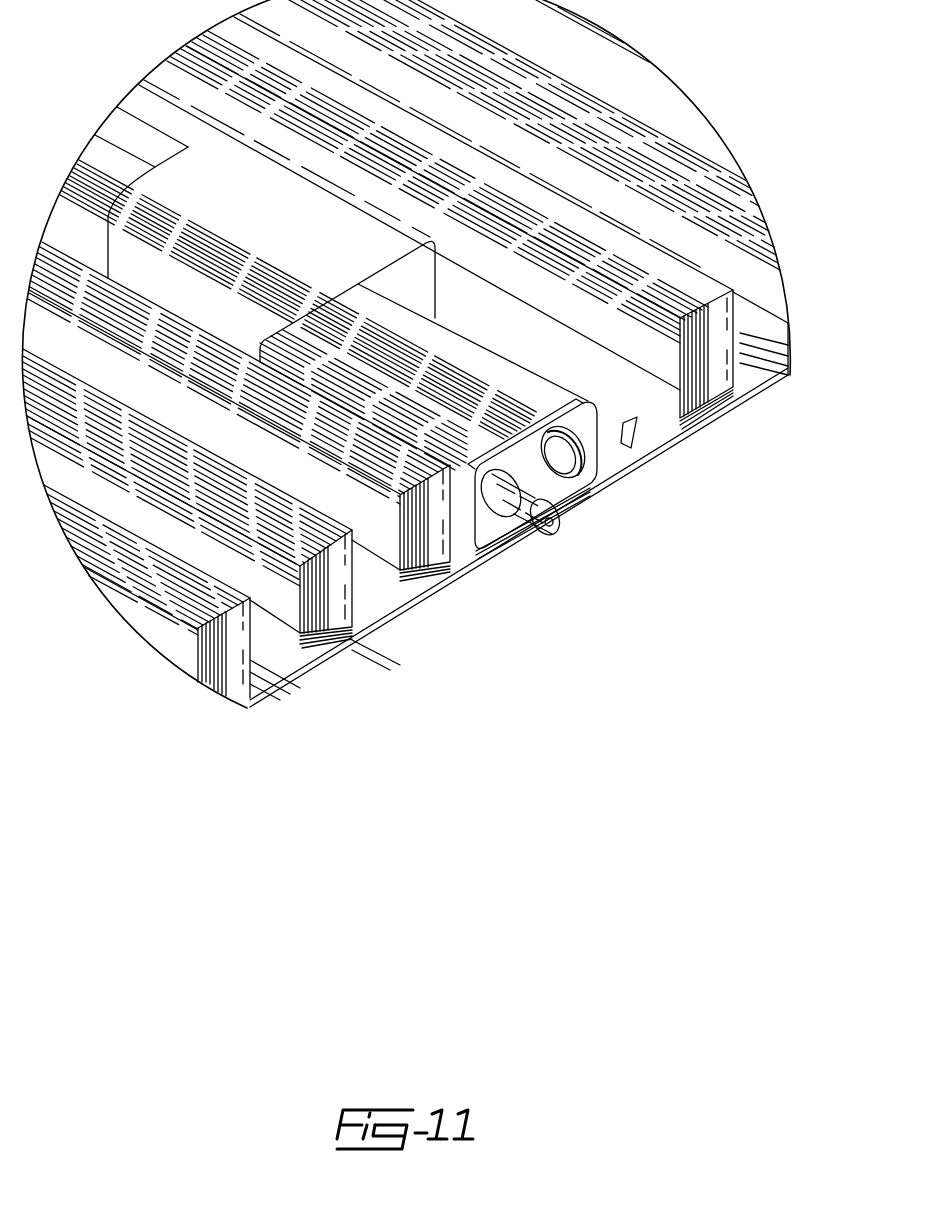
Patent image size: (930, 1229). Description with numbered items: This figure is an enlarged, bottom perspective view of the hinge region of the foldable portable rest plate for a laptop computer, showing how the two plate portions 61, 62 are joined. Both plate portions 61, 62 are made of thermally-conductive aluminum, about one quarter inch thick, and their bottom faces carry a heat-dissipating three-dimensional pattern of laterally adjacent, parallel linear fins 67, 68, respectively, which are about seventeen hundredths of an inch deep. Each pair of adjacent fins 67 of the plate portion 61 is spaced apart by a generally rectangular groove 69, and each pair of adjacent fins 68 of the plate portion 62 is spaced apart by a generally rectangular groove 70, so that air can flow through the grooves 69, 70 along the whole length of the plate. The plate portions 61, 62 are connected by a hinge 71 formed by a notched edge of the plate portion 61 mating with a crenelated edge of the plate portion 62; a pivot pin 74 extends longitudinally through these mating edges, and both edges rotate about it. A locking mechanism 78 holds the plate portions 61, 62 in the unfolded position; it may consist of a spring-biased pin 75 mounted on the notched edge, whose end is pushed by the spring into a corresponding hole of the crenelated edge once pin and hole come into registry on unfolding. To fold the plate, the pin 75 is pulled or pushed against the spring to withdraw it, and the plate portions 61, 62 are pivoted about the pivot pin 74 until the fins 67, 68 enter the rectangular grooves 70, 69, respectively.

The plate portion 61 is at (634, 470).
The plate portion 62 is at (366, 634).
The linear fins 67 is at (685, 287).
The linear fins 68 is at (185, 605).
The rectangular groove 69 is at (763, 275).
The rectangular groove 70 is at (292, 638).
The hinge 71 is at (572, 521).
The pivot pin 74 is at (561, 449).
The spring-biased pin 75 is at (517, 500).
The locking mechanism 78 is at (546, 550).